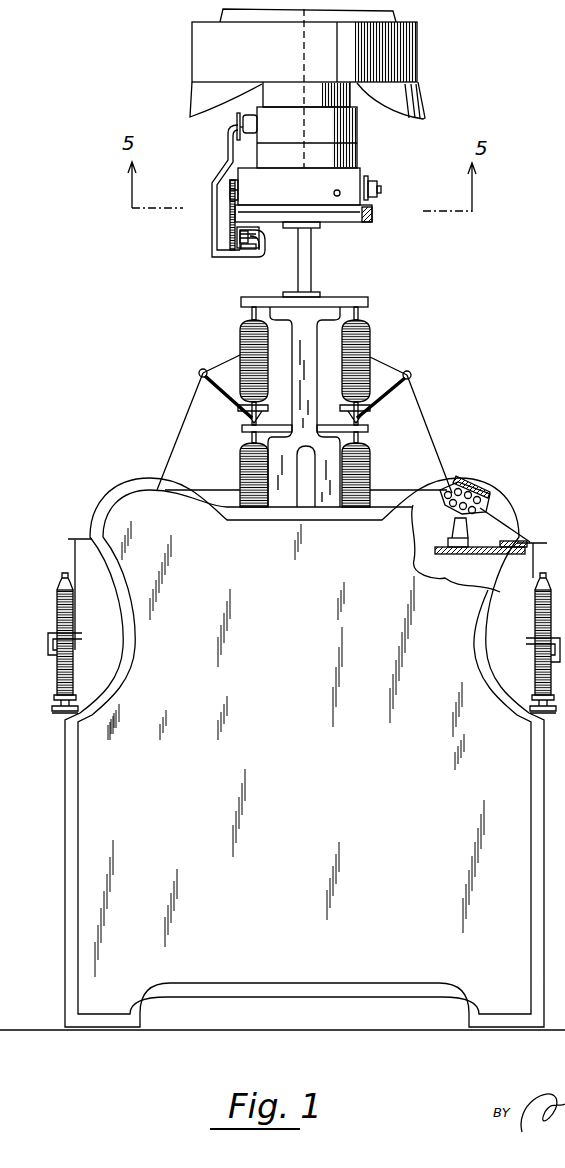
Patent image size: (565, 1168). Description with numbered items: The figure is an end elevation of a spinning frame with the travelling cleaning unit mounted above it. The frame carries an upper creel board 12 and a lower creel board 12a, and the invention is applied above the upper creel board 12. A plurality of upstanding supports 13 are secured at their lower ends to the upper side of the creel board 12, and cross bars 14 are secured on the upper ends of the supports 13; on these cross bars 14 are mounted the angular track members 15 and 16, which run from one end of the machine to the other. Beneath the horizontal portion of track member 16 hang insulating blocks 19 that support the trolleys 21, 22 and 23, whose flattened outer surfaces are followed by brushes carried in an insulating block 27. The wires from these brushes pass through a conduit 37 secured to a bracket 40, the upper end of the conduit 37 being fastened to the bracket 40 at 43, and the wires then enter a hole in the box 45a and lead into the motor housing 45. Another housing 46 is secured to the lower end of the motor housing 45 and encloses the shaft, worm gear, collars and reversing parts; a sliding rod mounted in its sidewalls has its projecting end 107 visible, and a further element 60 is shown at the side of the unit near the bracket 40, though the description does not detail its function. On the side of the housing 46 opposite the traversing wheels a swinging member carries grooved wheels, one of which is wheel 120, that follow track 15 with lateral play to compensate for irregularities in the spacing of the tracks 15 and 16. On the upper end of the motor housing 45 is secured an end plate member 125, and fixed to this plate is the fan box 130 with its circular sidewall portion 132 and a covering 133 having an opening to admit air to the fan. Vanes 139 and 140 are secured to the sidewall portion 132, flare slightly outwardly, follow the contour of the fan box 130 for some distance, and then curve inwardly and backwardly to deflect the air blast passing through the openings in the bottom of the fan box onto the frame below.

The creel board 12 is at (358, 297).
The creel board 12a is at (368, 428).
The upstanding supports 13 is at (309, 274).
The cross bars 14 is at (333, 224).
The angular track member 15 is at (372, 212).
The angular track member 16 is at (230, 208).
The insulating blocks 19 is at (240, 231).
The trolley 21 is at (232, 226).
The trolley 22 is at (240, 240).
The trolley 23 is at (222, 254).
The insulating block 27 is at (243, 228).
The conduit 37 is at (227, 146).
The bracket 40 is at (236, 147).
The conduit securing point 43 is at (236, 117).
The motor housing 45 is at (358, 148).
The box 45a is at (253, 128).
The housing 46 is at (298, 197).
The bracket 60 is at (240, 185).
The end of sliding rod 107 is at (335, 193).
The grooved wheel 120 is at (378, 183).
The end plate member 125 is at (353, 101).
The fan box 130 is at (196, 55).
The circular sidewall portion 132 is at (418, 51).
The covering 133 is at (406, 22).
The vane 139 is at (197, 97).
The vane 140 is at (425, 98).